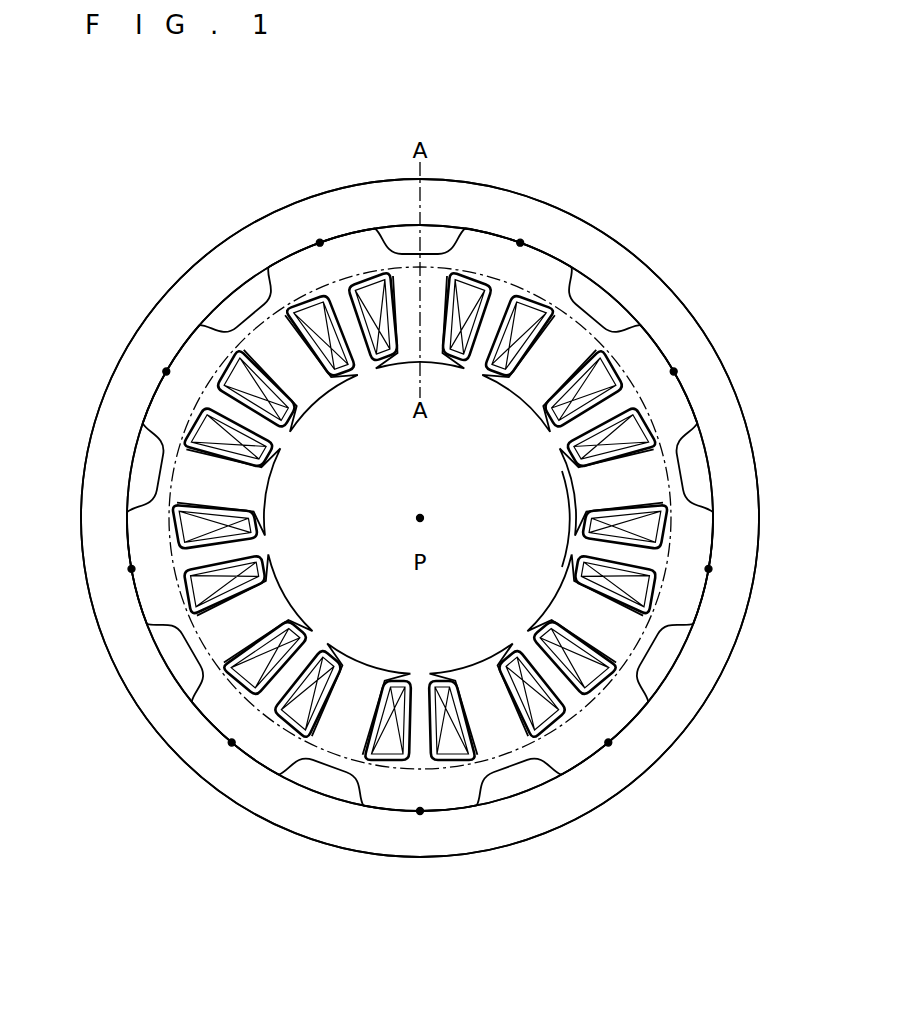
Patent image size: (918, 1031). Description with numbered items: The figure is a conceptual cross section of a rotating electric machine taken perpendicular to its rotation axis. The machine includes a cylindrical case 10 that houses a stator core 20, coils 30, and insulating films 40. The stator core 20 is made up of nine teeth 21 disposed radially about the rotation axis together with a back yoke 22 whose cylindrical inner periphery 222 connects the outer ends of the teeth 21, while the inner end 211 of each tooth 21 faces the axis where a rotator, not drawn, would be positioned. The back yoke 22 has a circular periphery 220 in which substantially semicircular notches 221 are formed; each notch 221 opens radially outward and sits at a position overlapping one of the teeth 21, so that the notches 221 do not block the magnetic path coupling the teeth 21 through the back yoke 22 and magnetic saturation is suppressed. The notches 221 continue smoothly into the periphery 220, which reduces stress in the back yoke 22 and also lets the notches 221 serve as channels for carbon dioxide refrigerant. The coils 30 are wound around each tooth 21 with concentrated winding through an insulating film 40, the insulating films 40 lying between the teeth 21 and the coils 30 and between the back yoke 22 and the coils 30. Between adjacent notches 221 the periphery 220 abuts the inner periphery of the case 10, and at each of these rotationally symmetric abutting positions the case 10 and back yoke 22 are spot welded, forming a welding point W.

The case 10 is at (593, 222).
The stator core 20 is at (670, 390).
The teeth 21 is at (318, 392).
The end of tooth 211 is at (560, 523).
The back yoke 22 is at (683, 188).
The periphery 220 is at (571, 261).
The notches 221 is at (229, 320).
The inner periphery 222 is at (645, 330).
The coils 30 is at (380, 350).
The insulating films 40 is at (317, 295).
The welding point W is at (674, 371).